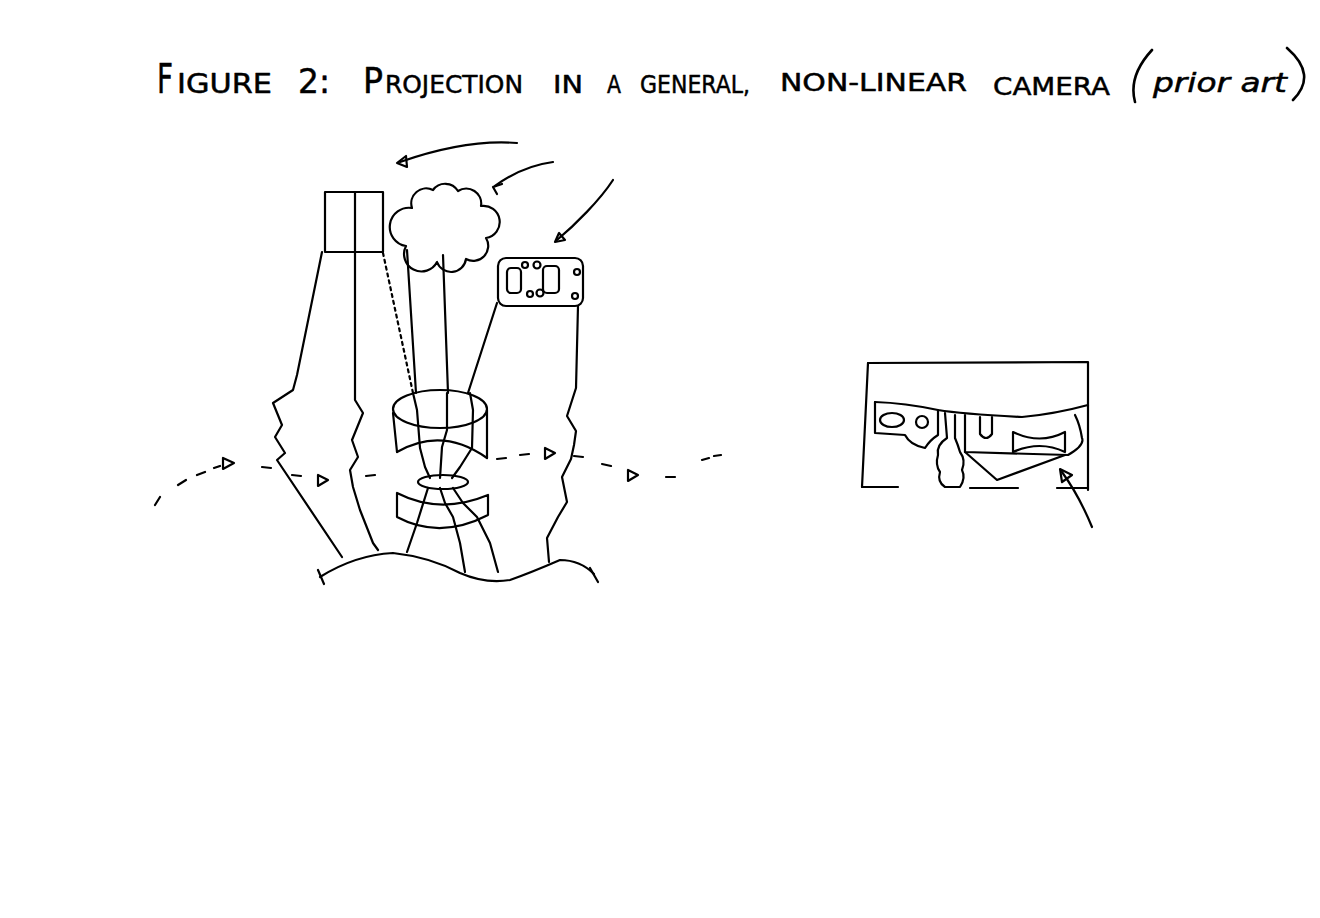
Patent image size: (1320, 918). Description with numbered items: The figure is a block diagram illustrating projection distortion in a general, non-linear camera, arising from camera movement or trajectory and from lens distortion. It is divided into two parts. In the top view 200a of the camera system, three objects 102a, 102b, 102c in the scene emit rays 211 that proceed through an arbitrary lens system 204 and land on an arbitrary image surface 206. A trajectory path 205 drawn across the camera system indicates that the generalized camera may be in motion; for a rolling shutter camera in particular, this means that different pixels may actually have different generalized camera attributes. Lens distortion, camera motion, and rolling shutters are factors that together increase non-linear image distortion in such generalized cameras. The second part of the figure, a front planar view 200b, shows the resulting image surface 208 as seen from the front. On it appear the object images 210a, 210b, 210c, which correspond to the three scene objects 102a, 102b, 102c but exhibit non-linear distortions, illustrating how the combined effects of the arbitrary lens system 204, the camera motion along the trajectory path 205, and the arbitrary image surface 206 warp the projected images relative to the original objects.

The object 102a is at (323, 205).
The object 102b is at (455, 188).
The object 102c is at (527, 260).
The top view 200a is at (192, 266).
The front planar view 200b is at (1062, 292).
The arbitrary lens system 204 is at (595, 450).
The trajectory path 205 is at (228, 496).
The arbitrary image surface 206 is at (589, 578).
The resulting image surface 208 is at (1088, 398).
The object image 210a is at (902, 438).
The object image 210b is at (955, 488).
The object image 210c is at (1022, 462).
The rays 211 is at (569, 406).